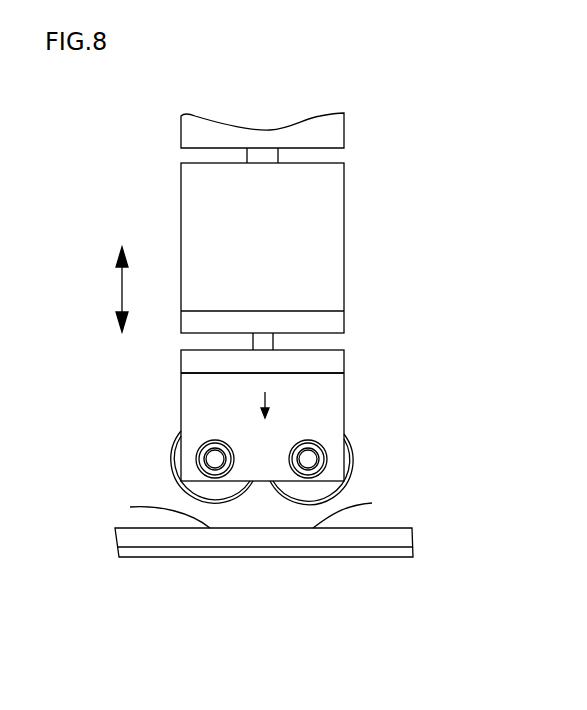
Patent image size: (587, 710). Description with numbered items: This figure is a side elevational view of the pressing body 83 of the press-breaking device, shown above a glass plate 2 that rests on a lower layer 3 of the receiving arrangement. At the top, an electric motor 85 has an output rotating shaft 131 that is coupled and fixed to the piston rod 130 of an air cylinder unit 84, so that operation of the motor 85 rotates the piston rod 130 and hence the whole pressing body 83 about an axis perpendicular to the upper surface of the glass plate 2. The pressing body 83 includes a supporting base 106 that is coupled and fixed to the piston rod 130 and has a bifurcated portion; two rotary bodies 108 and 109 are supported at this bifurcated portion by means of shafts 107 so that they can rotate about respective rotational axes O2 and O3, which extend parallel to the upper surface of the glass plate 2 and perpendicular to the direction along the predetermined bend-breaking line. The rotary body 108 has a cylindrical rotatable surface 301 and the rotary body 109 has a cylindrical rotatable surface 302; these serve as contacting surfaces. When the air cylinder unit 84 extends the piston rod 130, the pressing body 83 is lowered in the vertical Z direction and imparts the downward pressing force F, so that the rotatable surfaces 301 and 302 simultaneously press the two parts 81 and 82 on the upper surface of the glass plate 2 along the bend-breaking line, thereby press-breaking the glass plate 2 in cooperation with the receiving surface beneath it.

The glass plate 2 is at (402, 537).
The base layer 3 is at (385, 552).
The part 81 is at (130, 507).
The part 82 is at (372, 503).
The pressing body 83 is at (345, 392).
The air cylinder unit 84 is at (310, 207).
The electric motor 85 is at (199, 132).
The supporting base 106 is at (195, 390).
The shafts 107 is at (172, 449).
The rotary body 108 is at (196, 457).
The rotary body 109 is at (350, 463).
The piston rod 130 is at (270, 342).
The output rotating shaft 131 is at (265, 153).
The cylindrical rotatable surface 301 is at (172, 475).
The cylindrical rotatable surface 302 is at (346, 436).
The rotational axis O2 is at (215, 459).
The rotational axis O3 is at (302, 458).
The pressing force F is at (272, 400).
The Z direction Z is at (121, 289).